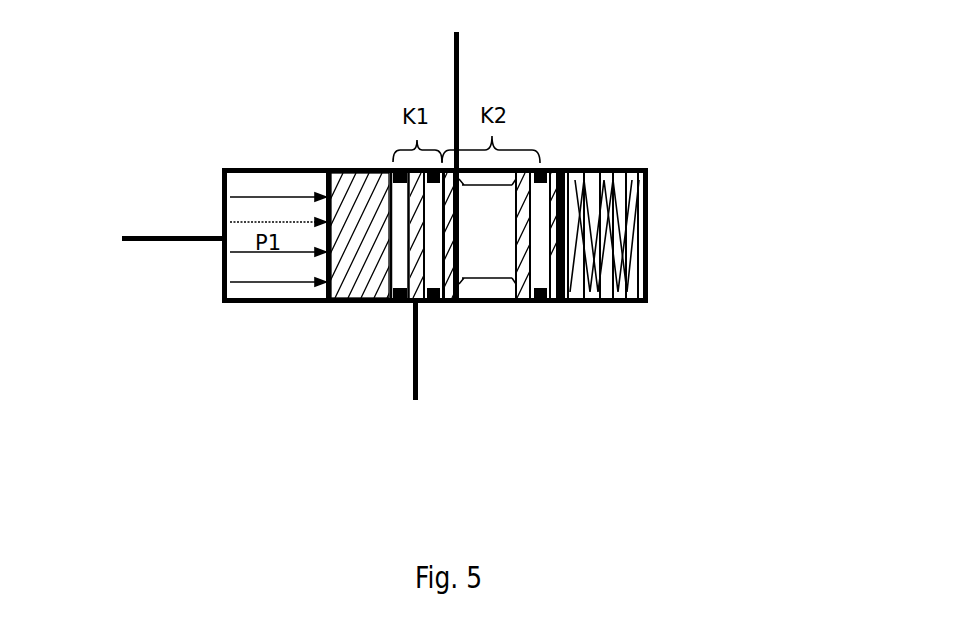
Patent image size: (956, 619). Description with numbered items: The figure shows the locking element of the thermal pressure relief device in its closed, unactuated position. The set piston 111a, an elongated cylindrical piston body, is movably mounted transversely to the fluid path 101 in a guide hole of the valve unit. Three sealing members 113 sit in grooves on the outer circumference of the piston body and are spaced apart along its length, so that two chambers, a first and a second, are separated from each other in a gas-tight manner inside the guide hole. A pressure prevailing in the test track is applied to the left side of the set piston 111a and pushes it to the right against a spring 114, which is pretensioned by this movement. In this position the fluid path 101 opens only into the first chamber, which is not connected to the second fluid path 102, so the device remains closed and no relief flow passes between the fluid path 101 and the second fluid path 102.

The set piston 111a is at (373, 197).
The second fluid path 102 is at (458, 61).
The sealing member 113 is at (545, 170).
The spring 114 is at (590, 262).
The fluid path 101 is at (417, 390).